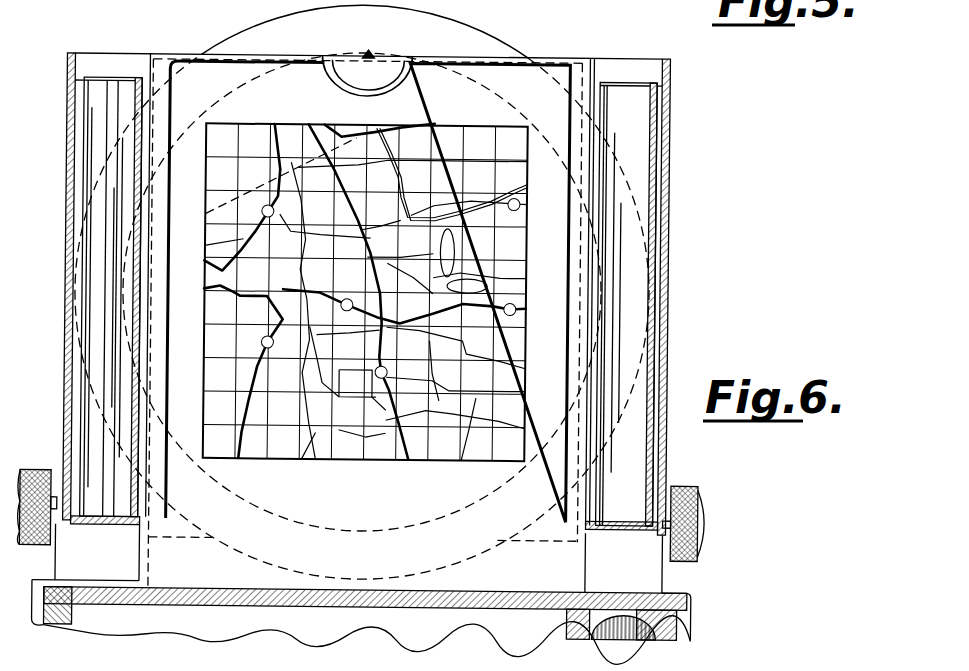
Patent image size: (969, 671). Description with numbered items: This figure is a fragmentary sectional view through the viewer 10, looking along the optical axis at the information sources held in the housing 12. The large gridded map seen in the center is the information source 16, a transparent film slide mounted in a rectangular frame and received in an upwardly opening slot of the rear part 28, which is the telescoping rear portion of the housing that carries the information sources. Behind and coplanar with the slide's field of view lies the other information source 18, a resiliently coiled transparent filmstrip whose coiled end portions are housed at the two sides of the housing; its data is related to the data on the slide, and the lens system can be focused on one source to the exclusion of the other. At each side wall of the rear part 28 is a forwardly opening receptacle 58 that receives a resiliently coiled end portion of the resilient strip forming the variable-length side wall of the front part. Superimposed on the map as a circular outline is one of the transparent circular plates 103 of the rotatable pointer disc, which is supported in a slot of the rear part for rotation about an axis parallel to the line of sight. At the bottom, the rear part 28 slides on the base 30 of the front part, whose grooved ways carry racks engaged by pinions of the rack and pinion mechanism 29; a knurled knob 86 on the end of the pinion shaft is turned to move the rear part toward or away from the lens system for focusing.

The viewer 10 is at (397, 333).
The housing 12 is at (676, 141).
The information source 16 is at (528, 257).
The information source 18 is at (105, 80).
The rear part 28 is at (686, 592).
The rack and pinion mechanism 29 is at (716, 505).
The base 30 is at (676, 621).
The receptacle 58 is at (67, 106).
The knurled knob 86 is at (690, 484).
The circular plate 103 is at (474, 38).